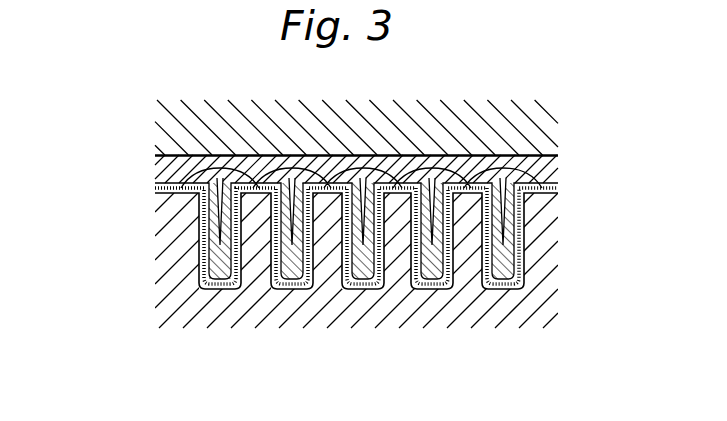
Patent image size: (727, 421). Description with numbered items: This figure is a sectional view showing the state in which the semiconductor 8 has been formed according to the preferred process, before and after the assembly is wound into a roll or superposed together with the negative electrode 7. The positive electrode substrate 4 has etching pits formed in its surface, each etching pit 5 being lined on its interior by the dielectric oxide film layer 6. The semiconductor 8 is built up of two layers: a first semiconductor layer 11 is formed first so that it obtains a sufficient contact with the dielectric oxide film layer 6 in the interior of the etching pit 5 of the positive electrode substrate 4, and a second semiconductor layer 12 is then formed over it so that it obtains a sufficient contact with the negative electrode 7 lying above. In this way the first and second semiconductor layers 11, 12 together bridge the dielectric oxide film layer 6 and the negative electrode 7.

The positive electrode substrate 4 is at (553, 243).
The etching pit 5 is at (503, 291).
The dielectric oxide film layer 6 is at (548, 191).
The negative electrode 7 is at (545, 122).
The semiconductor 8 is at (302, 212).
The first semiconductor layer 11 is at (158, 190).
The second semiconductor layer 12 is at (158, 168).